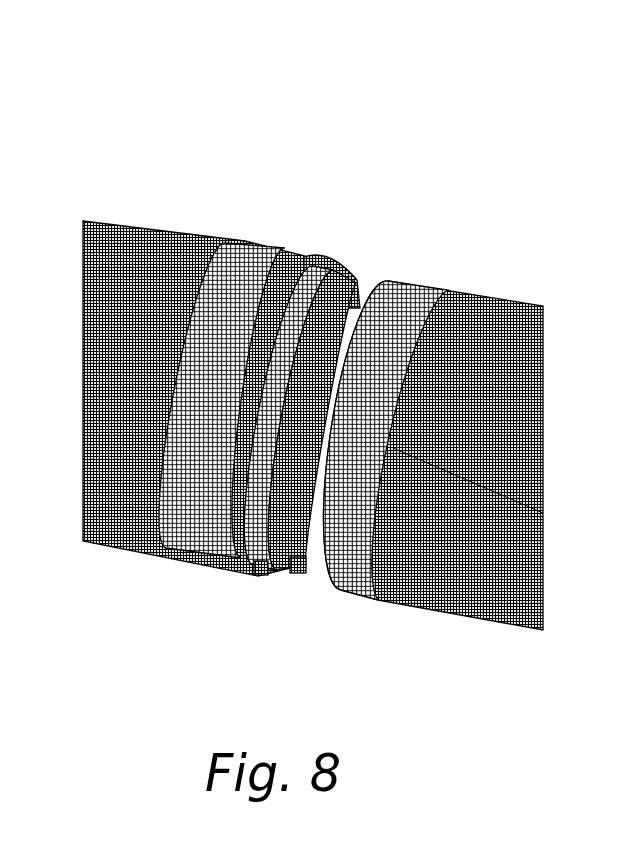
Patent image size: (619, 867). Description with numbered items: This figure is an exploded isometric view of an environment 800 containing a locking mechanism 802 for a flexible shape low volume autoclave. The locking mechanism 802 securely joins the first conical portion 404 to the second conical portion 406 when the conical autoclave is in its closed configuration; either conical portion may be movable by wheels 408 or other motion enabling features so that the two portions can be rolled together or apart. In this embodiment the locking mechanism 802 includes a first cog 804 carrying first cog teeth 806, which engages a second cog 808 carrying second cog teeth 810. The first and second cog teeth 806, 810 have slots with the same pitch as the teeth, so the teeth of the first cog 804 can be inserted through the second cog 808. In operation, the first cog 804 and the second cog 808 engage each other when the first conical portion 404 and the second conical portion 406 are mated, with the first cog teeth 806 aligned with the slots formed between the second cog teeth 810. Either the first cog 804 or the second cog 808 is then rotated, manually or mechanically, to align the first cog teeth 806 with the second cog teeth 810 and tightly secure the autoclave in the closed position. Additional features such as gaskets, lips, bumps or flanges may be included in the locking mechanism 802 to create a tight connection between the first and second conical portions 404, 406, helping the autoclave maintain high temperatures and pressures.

The environment 800 is at (310, 379).
The first conical portion 404 is at (185, 227).
The second conical portion 406 is at (488, 285).
The wheels 408 is at (202, 555).
The locking mechanism 802 is at (320, 392).
The first cog 804 is at (346, 265).
The first cog teeth 806 is at (287, 563).
The second cog 808 is at (300, 254).
The second cog teeth 810 is at (253, 553).